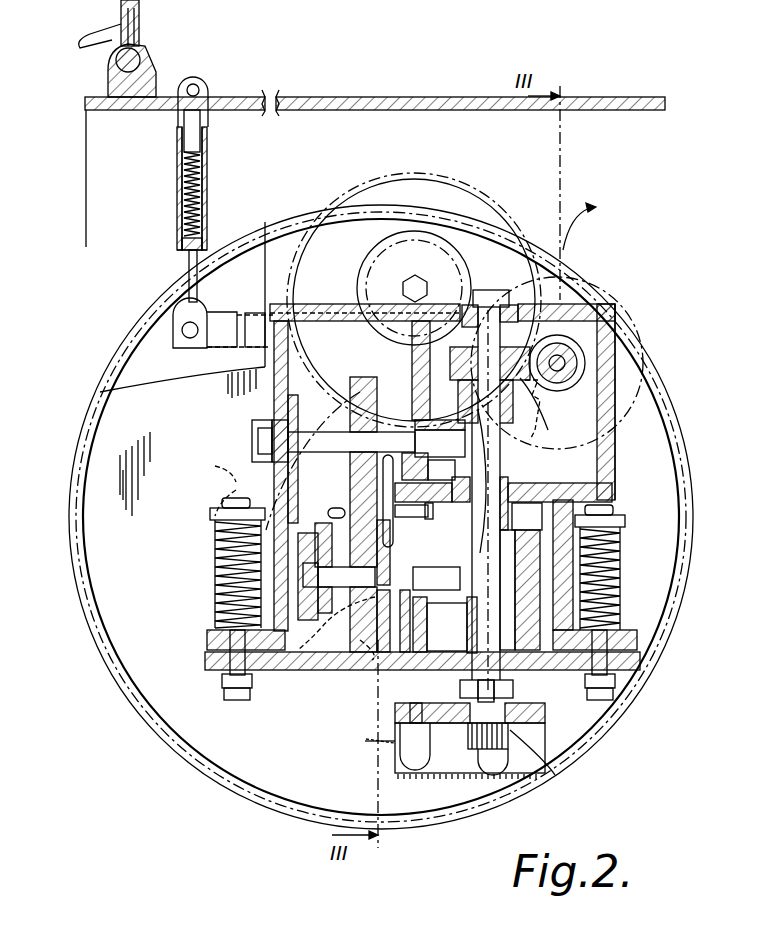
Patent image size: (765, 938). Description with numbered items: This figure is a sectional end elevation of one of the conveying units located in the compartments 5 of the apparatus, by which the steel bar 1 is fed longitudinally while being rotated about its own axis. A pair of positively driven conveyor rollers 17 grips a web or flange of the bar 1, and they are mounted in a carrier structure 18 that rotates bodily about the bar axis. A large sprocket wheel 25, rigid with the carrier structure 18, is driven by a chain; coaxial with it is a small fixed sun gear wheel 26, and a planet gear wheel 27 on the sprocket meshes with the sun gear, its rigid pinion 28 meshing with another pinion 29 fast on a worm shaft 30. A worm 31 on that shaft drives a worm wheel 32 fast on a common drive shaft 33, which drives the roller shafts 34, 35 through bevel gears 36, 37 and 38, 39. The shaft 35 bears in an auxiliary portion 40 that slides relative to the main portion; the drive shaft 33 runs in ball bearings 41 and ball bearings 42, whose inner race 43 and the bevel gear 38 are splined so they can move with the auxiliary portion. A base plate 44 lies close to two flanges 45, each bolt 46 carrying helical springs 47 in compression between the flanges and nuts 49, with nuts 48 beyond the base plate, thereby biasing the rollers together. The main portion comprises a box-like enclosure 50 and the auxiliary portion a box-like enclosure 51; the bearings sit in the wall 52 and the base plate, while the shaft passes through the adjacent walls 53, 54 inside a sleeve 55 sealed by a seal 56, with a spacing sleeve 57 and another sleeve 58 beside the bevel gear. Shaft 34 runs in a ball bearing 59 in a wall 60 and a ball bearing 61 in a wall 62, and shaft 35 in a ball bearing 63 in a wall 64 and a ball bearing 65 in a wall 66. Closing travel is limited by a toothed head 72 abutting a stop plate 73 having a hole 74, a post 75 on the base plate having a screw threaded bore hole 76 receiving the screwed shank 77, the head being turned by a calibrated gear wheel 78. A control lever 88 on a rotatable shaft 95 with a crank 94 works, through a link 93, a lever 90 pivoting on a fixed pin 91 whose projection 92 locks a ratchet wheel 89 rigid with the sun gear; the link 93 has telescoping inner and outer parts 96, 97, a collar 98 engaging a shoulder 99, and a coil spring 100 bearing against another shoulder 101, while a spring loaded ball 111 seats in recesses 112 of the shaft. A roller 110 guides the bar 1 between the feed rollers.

The steel bar 1 is at (395, 478).
The compartments 5 is at (296, 112).
The conveyor rollers 17 is at (350, 392).
The carrier structure 18 is at (345, 300).
The sprocket wheel 25 is at (303, 215).
The sun gear wheel 26 is at (275, 482).
The planet gear wheel 27 is at (470, 178).
The pinion 28 is at (372, 265).
The pinion 29 is at (572, 262).
The worm shaft 30 is at (565, 395).
The worm 31 is at (562, 372).
The worm wheel 32 is at (520, 395).
The common drive shaft 33 is at (535, 422).
The shaft 34 is at (322, 453).
The shaft 35 is at (372, 570).
The bevel gear 36 is at (528, 440).
The bevel gear 37 is at (465, 458).
The bevel gear 38 is at (433, 621).
The bevel gear 39 is at (436, 578).
The auxiliary portion 40 is at (360, 672).
The ball bearings 41 is at (520, 310).
The ball bearings 42 is at (500, 670).
The inner race 43 is at (460, 698).
The base plate 44 is at (268, 670).
The flanges 45 is at (206, 630).
The bolt 46 is at (230, 640).
The helical springs 47 is at (210, 555).
The nuts 48 is at (222, 692).
The nuts 49 is at (210, 512).
The box-like enclosure 50 is at (597, 376).
The box-like enclosure 51 is at (498, 580).
The wall 52 is at (575, 310).
The wall 53 is at (590, 484).
The wall 54 is at (521, 503).
The sleeve 55 is at (584, 430).
The seal 56 is at (462, 482).
The spacing sleeve 57 is at (490, 612).
The sleeve 58 is at (515, 605).
The ball bearing 59 is at (252, 430).
The wall 60 is at (280, 405).
The ball bearing 61 is at (410, 450).
The wall 62 is at (412, 395).
The ball bearing 63 is at (318, 530).
The wall 64 is at (345, 534).
The ball bearing 65 is at (390, 590).
The wall 66 is at (400, 640).
The head 72 is at (462, 760).
The stop plate 73 is at (545, 722).
The hole 74 is at (560, 758).
The post 75 is at (430, 704).
The screw threaded bore hole 76 is at (520, 728).
The screwed shank 77 is at (452, 736).
The gear wheel 78 is at (365, 741).
The control lever 88 is at (112, 42).
The ratchet wheel 89 is at (216, 466).
The lever 90 is at (212, 312).
The fixed pin 91 is at (485, 290).
The projection 92 is at (360, 322).
The link 93 is at (210, 252).
The crank 94 is at (165, 58).
The rotatable shaft 95 is at (150, 48).
The inner telescoping part 96 is at (204, 214).
The outer telescoping part 97 is at (207, 166).
The collar 98 is at (181, 245).
The shoulder 99 is at (187, 262).
The coil spring 100 is at (183, 200).
The shoulder 101 is at (183, 150).
The roller 110 is at (414, 517).
The spring loaded ball 111 is at (134, 46).
The recesses 112 is at (140, 48).